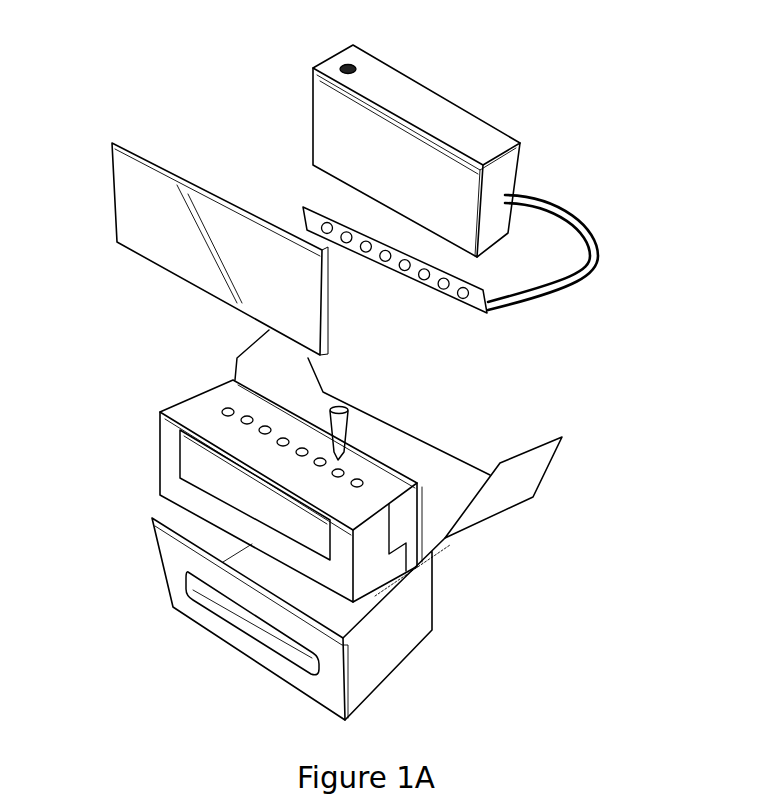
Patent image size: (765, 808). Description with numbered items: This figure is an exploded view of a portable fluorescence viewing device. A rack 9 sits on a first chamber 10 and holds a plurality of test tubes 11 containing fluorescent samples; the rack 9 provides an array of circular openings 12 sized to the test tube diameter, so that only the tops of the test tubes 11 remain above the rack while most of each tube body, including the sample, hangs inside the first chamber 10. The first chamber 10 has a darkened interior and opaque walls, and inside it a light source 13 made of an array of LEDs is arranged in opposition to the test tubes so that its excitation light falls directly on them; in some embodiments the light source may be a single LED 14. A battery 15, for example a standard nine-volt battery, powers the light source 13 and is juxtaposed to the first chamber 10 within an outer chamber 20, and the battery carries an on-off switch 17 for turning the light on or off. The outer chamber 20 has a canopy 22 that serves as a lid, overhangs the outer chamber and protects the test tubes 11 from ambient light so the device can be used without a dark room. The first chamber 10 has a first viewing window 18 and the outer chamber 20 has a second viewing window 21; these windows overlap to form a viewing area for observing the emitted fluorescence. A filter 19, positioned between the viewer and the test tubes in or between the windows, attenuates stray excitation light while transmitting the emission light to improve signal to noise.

The rack 9 is at (215, 402).
The first chamber 10 is at (170, 407).
The test tubes 11 is at (330, 432).
The circular openings 12 is at (357, 483).
The light source 13 is at (483, 310).
The single LED 14 is at (323, 223).
The battery 15 is at (422, 33).
The on-off switch 17 is at (352, 64).
The first viewing window 18 is at (173, 493).
The filter 19 is at (125, 220).
The outer chamber 20 is at (387, 643).
The second viewing window 21 is at (212, 610).
The canopy 22 is at (502, 493).